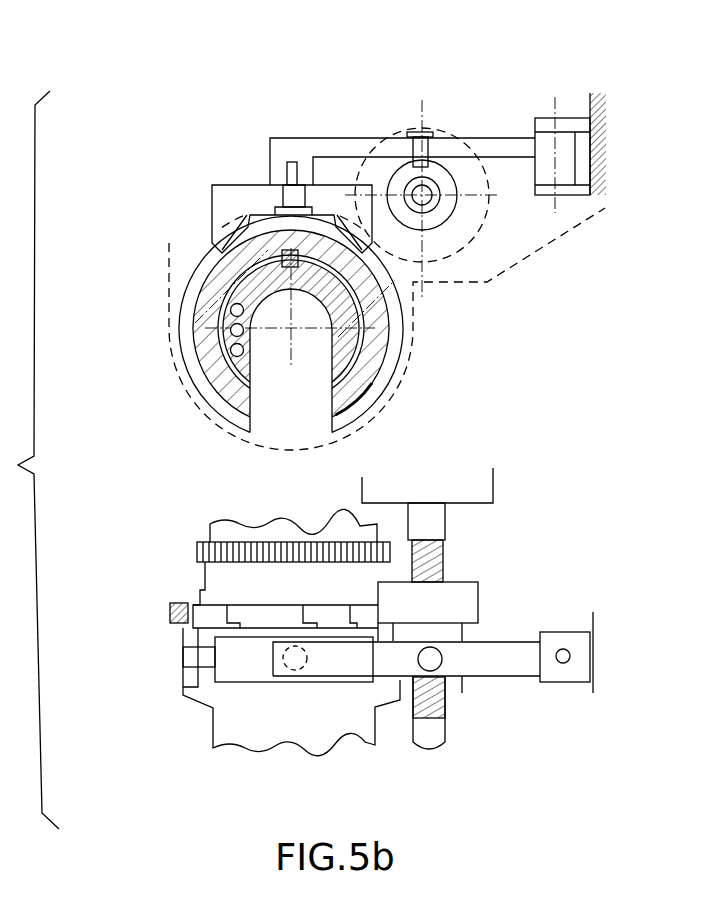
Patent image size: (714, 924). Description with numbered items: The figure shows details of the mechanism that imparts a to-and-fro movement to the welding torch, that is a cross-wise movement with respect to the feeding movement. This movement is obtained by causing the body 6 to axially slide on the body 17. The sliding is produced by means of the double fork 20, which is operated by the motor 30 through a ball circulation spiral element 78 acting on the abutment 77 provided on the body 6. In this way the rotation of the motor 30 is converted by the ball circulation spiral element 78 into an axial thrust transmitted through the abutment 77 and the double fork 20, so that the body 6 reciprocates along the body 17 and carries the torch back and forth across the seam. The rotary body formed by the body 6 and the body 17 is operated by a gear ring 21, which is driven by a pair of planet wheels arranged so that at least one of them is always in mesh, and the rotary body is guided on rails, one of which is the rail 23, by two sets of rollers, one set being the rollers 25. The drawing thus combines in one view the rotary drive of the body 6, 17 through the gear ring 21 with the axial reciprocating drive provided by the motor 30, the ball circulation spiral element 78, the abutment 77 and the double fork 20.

The body 6 is at (380, 350).
The body 17 is at (345, 359).
The double fork 20 is at (243, 199).
The gear ring 21 is at (223, 550).
The rail 23 is at (170, 613).
The rollers 25 is at (330, 613).
The motor 30 is at (432, 128).
The abutment 77 is at (210, 262).
The ball circulation spiral element 78 is at (445, 207).